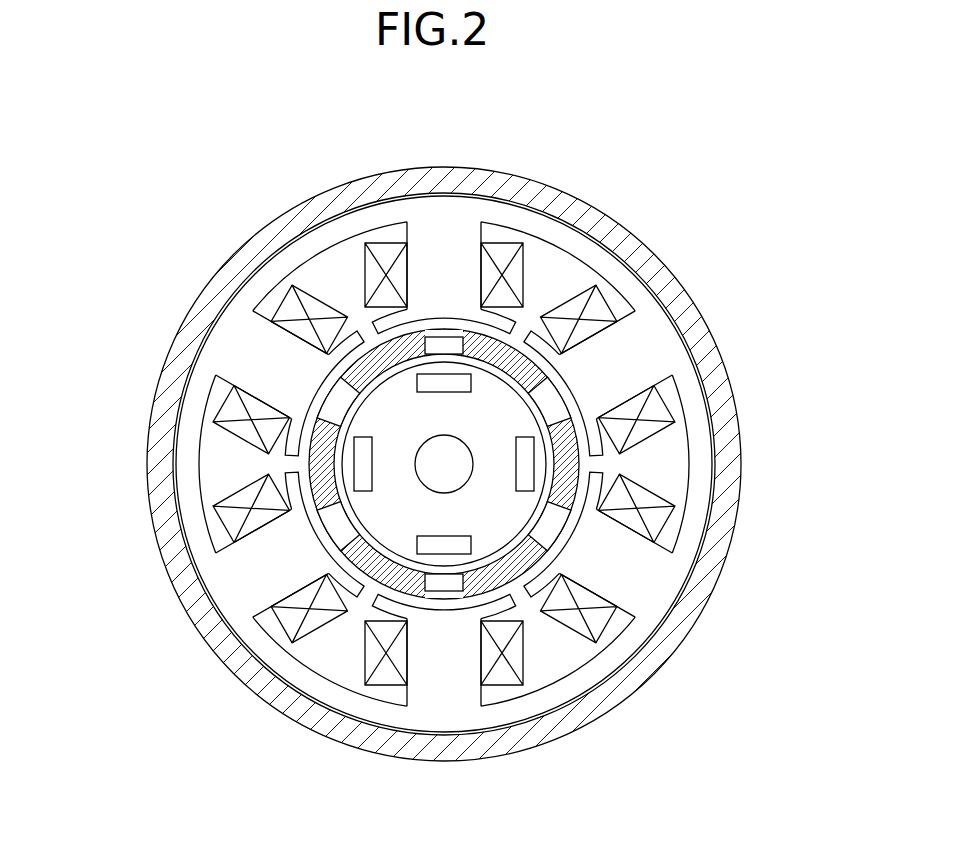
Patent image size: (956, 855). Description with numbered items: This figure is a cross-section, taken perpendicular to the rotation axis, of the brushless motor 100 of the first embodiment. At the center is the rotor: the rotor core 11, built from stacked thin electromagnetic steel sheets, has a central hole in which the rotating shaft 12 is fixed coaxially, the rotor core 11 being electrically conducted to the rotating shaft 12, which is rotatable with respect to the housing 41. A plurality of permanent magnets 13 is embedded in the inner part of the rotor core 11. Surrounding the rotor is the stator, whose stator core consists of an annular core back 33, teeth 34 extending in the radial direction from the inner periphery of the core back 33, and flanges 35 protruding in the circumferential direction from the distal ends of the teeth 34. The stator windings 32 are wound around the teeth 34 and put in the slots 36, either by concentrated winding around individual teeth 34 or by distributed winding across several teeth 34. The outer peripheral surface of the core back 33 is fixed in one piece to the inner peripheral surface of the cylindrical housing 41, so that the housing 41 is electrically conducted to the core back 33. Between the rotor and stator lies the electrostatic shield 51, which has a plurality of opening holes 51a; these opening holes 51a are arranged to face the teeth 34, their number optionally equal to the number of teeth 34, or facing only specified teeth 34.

The motor 100 is at (201, 788).
The rotor core 11 is at (558, 570).
The rotating shaft 12 is at (445, 468).
The permanent magnets 13 is at (500, 513).
The stator windings 32 is at (566, 297).
The core back 33 is at (693, 393).
The teeth 34 is at (622, 357).
The flanges 35 is at (526, 463).
The slots 36 is at (340, 282).
The housing 41 is at (437, 166).
The electrostatic shield 51 is at (360, 568).
The opening holes 51a is at (345, 525).